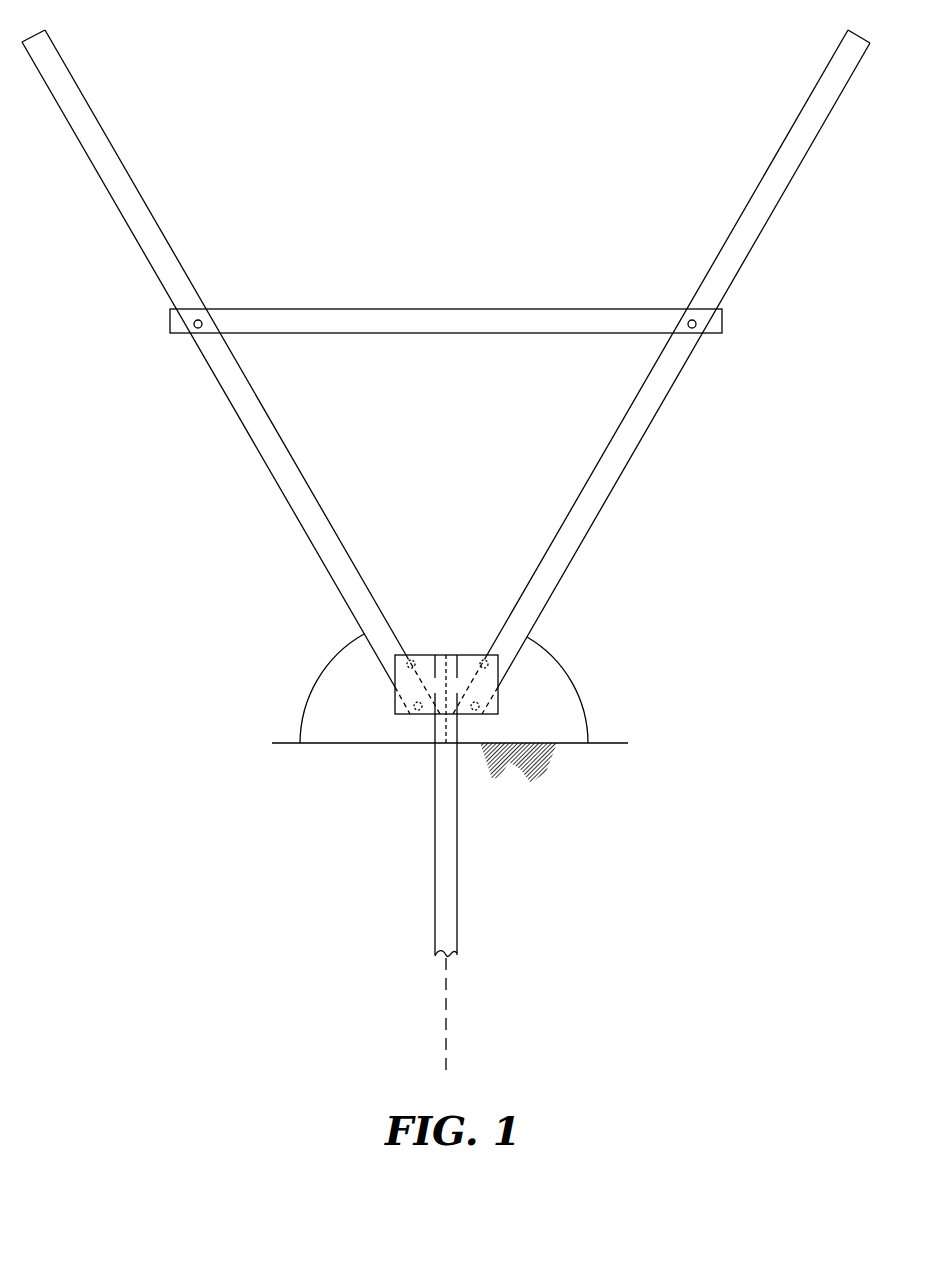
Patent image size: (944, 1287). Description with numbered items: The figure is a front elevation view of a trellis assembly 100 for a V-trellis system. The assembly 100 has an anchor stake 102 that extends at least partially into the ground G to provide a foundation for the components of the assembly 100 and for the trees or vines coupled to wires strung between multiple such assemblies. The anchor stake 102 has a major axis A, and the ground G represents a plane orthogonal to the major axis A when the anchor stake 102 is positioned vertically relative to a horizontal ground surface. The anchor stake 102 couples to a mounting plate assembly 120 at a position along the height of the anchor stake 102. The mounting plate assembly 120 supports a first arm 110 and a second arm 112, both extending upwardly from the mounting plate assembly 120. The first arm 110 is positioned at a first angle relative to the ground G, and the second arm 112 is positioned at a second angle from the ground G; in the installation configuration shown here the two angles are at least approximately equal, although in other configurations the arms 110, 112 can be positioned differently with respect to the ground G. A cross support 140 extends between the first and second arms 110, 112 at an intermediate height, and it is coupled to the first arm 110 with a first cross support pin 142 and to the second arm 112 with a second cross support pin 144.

The trellis assembly 100 is at (808, 478).
The anchor stake 102 is at (441, 846).
The first arm 110 is at (289, 482).
The second arm 112 is at (610, 481).
The mounting plate assembly 120 is at (443, 648).
The cross support 140 is at (437, 320).
The first cross support pin 142 is at (193, 320).
The second cross support pin 144 is at (688, 318).
The major axis A is at (446, 1011).
The ground G is at (540, 775).